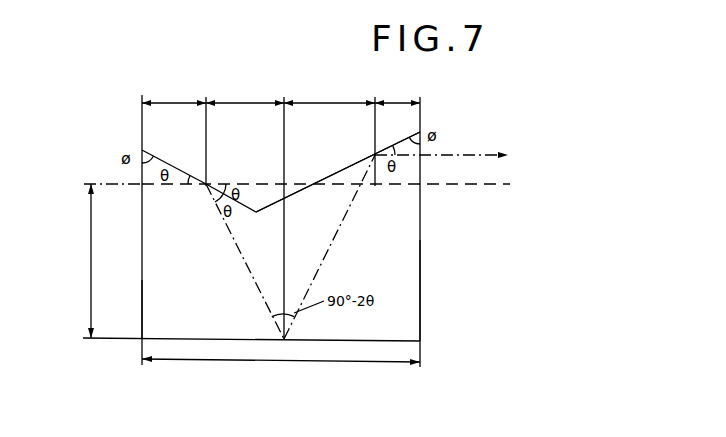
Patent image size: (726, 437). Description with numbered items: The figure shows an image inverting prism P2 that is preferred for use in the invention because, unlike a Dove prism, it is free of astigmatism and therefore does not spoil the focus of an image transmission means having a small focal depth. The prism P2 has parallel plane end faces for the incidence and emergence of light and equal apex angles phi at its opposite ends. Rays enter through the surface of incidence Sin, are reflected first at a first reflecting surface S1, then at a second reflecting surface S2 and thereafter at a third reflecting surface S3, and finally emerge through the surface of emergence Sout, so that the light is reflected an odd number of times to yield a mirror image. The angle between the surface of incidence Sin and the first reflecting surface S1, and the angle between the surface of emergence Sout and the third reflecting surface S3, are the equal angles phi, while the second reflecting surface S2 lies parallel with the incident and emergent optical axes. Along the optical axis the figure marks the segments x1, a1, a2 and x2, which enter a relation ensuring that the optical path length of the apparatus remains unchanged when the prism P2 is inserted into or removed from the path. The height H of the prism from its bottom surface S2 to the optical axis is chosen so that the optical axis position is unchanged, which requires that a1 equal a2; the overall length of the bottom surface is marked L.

The first reflecting surface S1 is at (169, 162).
The second reflecting surface S2 is at (188, 338).
The third reflecting surface S3 is at (342, 170).
The surface of incidence Sin is at (141, 305).
The surface of emergence Sout is at (420, 313).
The prism P2 is at (420, 272).
The height of the prism H is at (97, 261).
The length L is at (281, 353).
The optical path length segment x1 is at (177, 92).
The optical path length segment a1 is at (247, 92).
The optical path length segment a2 is at (329, 92).
The optical path length segment x2 is at (401, 92).